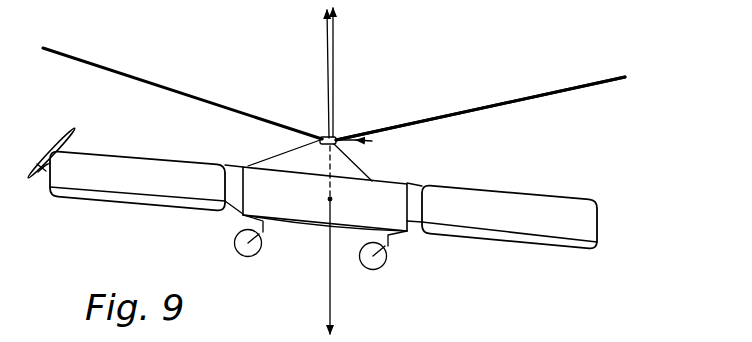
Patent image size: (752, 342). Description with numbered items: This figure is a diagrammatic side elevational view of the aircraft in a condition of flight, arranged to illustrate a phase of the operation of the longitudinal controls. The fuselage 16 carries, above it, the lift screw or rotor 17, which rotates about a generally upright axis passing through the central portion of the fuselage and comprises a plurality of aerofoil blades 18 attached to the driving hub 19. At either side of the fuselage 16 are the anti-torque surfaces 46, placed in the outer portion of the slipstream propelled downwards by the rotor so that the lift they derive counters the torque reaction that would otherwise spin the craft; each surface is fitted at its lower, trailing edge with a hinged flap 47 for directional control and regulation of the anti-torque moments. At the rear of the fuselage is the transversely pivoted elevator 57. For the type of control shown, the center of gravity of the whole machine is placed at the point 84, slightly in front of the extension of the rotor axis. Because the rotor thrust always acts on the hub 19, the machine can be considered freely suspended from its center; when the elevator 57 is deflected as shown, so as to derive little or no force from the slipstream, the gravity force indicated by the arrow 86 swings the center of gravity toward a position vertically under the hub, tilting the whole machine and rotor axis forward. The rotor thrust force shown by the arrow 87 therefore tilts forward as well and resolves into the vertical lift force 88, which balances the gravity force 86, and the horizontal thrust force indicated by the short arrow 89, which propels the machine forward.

The fuselage 16 is at (323, 204).
The lift screw or rotor 17 is at (480, 108).
The aerofoil blades 18 is at (141, 78).
The driving hub 19 is at (322, 136).
The anti-torque surfaces 46 is at (323, 200).
The hinged flap 47 is at (160, 203).
The elevator 57 is at (51, 150).
The center of gravity 84 is at (329, 199).
The gravity force arrow 86 is at (342, 266).
The rotor thrust force arrow 87 is at (345, 72).
The vertical lift force 88 is at (318, 74).
The horizontal thrust force arrow 89 is at (363, 147).